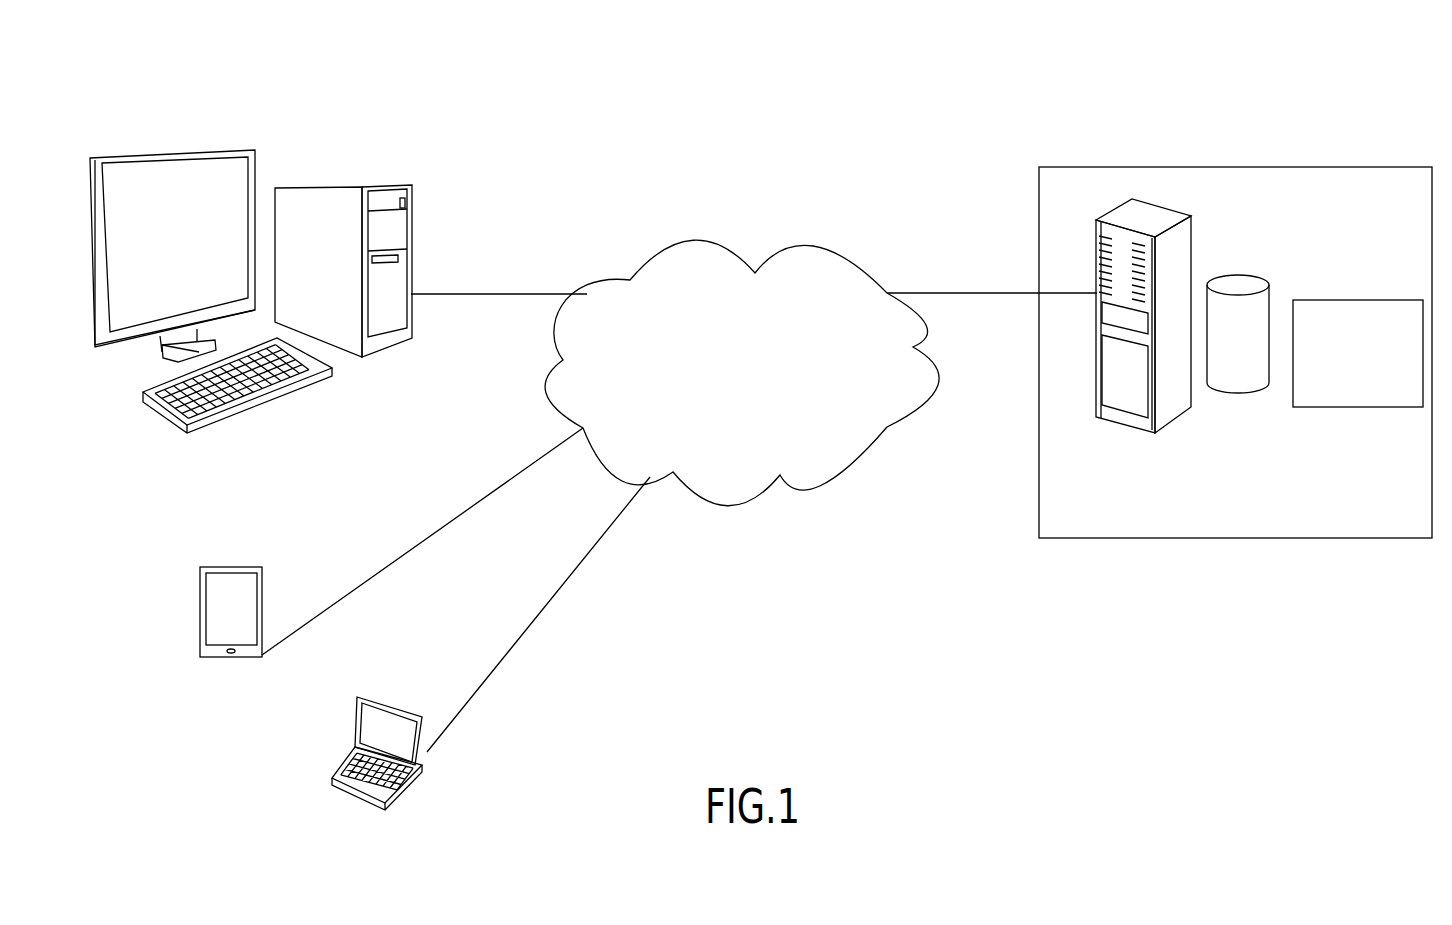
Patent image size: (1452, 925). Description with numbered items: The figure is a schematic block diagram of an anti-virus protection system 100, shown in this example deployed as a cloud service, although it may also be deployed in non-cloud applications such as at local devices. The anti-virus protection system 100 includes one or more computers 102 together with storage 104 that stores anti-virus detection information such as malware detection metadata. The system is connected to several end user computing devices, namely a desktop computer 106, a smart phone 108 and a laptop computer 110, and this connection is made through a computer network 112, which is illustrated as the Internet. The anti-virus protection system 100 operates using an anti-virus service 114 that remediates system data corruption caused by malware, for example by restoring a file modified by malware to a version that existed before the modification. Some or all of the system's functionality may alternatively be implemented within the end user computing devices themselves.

The anti-virus protection system 100 is at (1213, 100).
The computer 102 is at (1170, 213).
The storage 104 is at (1230, 278).
The desktop computer 106 is at (175, 102).
The smart phone 108 is at (242, 566).
The laptop computer 110 is at (397, 707).
The computer network 112 is at (768, 152).
The anti-virus service 114 is at (1345, 408).